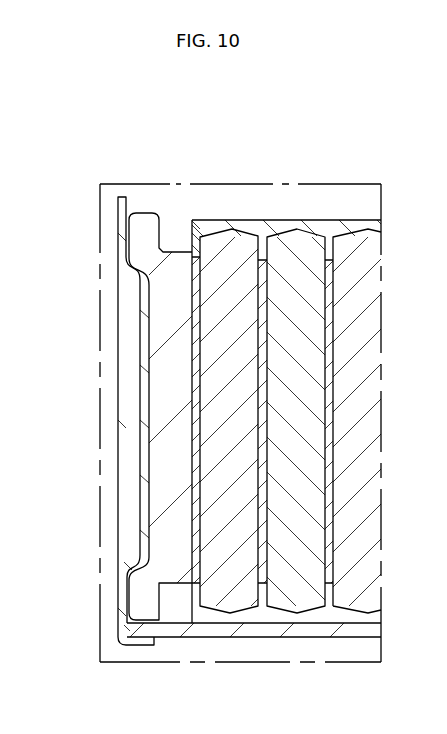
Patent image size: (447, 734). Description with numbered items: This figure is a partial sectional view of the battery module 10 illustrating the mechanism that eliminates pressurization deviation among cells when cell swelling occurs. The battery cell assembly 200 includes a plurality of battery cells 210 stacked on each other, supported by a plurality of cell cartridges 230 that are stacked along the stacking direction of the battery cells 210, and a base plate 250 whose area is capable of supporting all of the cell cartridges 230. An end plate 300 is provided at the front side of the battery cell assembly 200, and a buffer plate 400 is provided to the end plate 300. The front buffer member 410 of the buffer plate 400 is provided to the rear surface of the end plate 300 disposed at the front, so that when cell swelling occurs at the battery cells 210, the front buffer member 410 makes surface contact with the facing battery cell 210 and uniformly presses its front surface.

The battery module 10 is at (104, 164).
The battery cell assembly 200 is at (295, 197).
The battery cell 210 is at (228, 590).
The cell cartridge 230 is at (267, 617).
The base plate 250 is at (330, 633).
The end plate 300 is at (118, 227).
The buffer plate 400 is at (161, 197).
The front buffer member 410 is at (156, 344).